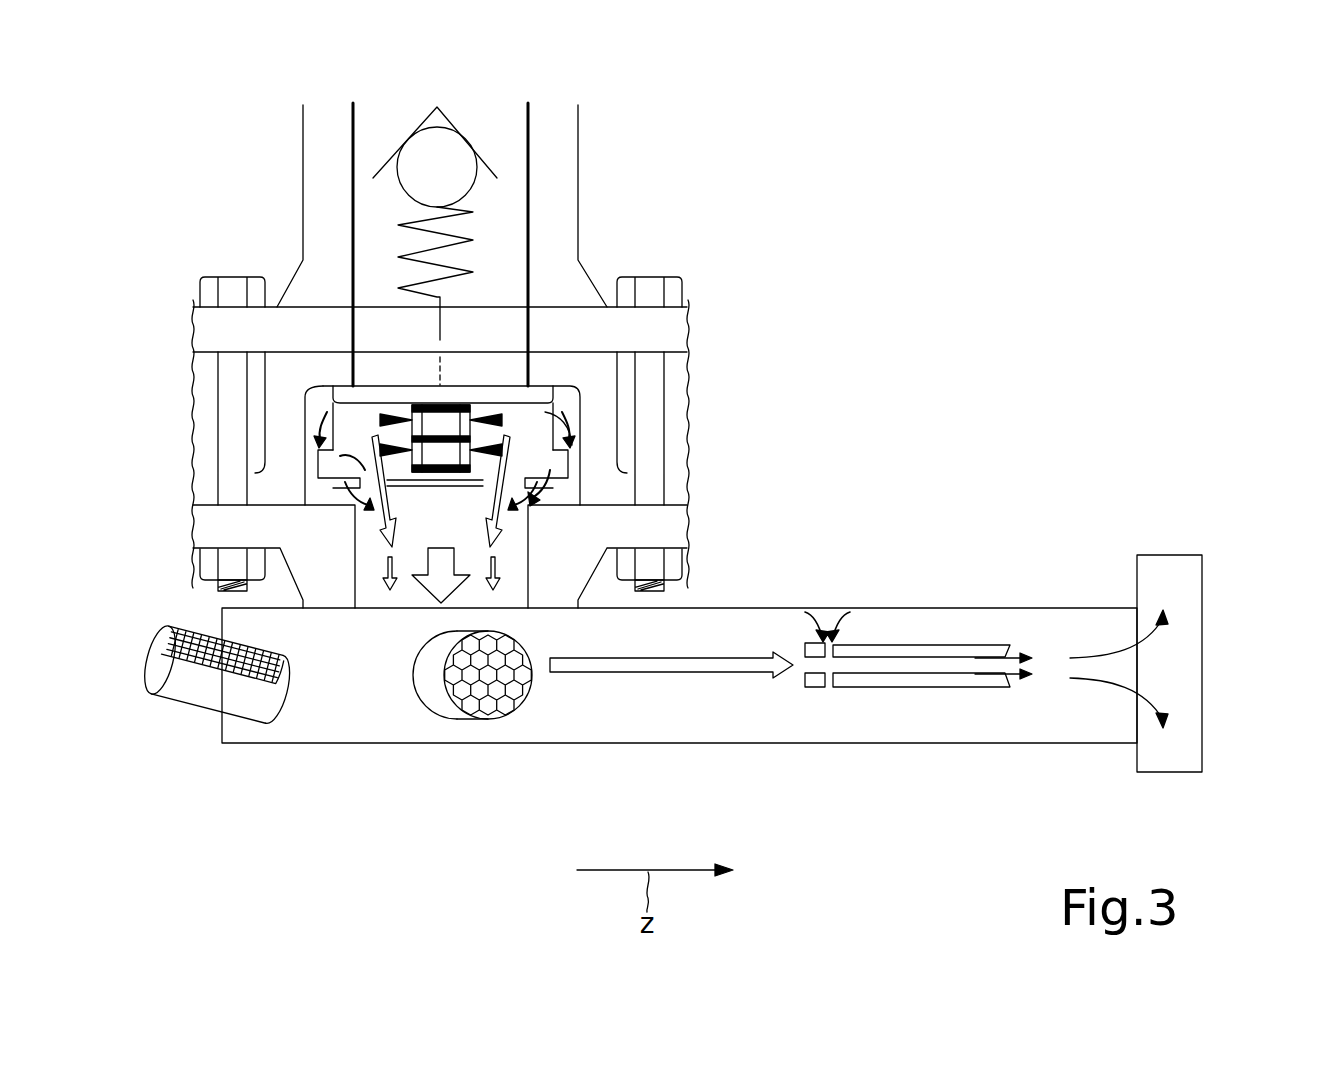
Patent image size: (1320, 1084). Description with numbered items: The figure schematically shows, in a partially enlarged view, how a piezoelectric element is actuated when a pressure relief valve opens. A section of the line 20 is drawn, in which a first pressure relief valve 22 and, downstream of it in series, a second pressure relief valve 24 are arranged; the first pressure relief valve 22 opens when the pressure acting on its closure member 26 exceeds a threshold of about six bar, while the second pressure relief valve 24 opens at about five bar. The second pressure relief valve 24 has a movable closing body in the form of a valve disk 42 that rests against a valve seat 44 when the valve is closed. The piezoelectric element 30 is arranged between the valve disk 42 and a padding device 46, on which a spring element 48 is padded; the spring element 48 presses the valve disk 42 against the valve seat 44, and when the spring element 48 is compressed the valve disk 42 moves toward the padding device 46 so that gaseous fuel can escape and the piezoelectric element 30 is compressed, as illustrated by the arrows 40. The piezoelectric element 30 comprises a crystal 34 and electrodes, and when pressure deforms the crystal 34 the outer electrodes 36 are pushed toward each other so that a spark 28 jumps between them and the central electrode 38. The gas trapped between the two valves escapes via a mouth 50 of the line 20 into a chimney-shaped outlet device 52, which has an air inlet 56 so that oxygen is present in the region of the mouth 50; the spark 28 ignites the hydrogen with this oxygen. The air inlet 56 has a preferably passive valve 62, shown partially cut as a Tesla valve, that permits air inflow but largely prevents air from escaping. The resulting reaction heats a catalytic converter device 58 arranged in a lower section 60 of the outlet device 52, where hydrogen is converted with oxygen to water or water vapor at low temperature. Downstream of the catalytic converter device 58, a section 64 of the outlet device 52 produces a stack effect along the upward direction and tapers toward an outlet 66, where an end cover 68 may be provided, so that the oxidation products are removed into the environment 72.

The line 20 is at (580, 170).
The first pressure relief valve 22 is at (505, 145).
The second pressure relief valve 24 is at (312, 401).
The closure member 26 is at (433, 192).
The spark 28 is at (330, 470).
The piezoelectric element 30 is at (367, 400).
The crystal 34 is at (517, 420).
The outer electrode 36 is at (480, 400).
The central electrode 38 is at (557, 404).
The arrow 40 is at (440, 396).
The valve disk 42 is at (400, 396).
The valve seat 44 is at (337, 382).
The padding device 46 is at (527, 500).
The spring element 48 is at (310, 427).
The mouth 50 is at (513, 562).
The outlet device 52 is at (860, 553).
The air inlet 56 is at (209, 717).
The catalytic converter device 58 is at (487, 697).
The lower section 60 is at (397, 734).
The passive valve 62 is at (222, 655).
The section 64 is at (843, 742).
The outlet 66 is at (1190, 545).
The end cover 68 is at (1203, 630).
The environment 72 is at (1020, 402).